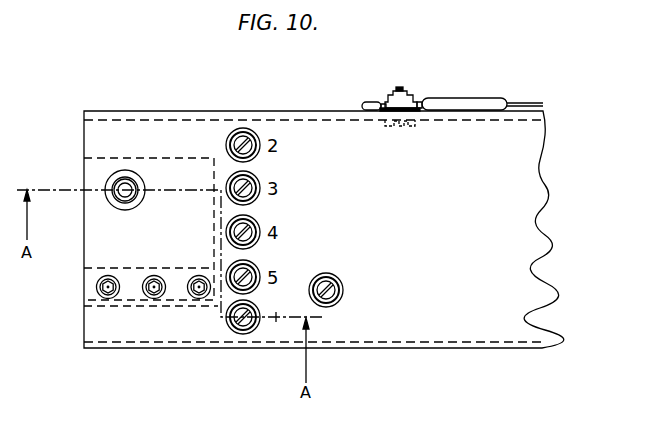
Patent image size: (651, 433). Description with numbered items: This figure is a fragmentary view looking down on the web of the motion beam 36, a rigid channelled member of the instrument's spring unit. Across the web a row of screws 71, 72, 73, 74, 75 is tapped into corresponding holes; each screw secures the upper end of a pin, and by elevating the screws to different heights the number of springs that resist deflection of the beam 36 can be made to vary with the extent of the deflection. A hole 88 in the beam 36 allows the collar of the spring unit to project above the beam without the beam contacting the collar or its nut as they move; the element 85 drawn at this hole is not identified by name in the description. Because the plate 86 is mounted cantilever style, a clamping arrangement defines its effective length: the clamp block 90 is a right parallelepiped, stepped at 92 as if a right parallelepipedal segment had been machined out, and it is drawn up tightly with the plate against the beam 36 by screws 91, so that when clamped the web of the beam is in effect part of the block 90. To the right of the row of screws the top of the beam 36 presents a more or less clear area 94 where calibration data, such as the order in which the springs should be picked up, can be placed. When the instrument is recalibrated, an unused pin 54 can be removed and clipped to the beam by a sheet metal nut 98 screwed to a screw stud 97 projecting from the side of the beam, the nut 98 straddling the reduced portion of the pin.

The motion beam 36 is at (97, 177).
The pin 54 is at (440, 99).
The screw 71 is at (232, 330).
The screw 72 is at (228, 143).
The screw 73 is at (228, 188).
The screw 74 is at (228, 230).
The screw 75 is at (228, 272).
The bushing 85 is at (118, 179).
The plate 86 is at (161, 219).
The hole 88 is at (133, 171).
The clamp block 90 is at (101, 278).
The screws 91 is at (192, 279).
The step 92 is at (135, 310).
The clear area 94 is at (331, 312).
The screw stud 97 is at (400, 88).
The sheet metal nut 98 is at (388, 98).